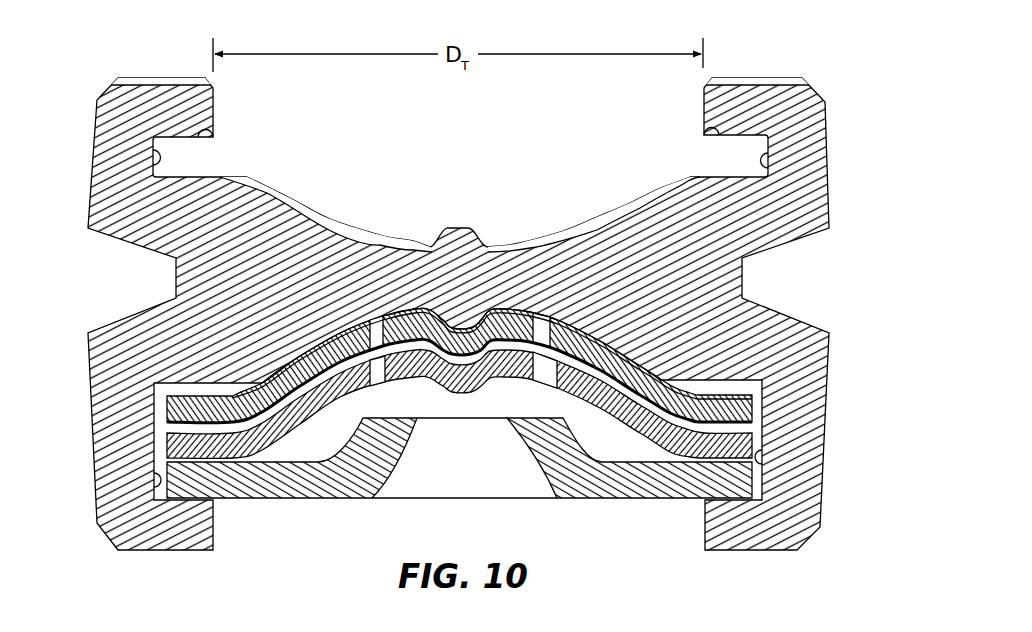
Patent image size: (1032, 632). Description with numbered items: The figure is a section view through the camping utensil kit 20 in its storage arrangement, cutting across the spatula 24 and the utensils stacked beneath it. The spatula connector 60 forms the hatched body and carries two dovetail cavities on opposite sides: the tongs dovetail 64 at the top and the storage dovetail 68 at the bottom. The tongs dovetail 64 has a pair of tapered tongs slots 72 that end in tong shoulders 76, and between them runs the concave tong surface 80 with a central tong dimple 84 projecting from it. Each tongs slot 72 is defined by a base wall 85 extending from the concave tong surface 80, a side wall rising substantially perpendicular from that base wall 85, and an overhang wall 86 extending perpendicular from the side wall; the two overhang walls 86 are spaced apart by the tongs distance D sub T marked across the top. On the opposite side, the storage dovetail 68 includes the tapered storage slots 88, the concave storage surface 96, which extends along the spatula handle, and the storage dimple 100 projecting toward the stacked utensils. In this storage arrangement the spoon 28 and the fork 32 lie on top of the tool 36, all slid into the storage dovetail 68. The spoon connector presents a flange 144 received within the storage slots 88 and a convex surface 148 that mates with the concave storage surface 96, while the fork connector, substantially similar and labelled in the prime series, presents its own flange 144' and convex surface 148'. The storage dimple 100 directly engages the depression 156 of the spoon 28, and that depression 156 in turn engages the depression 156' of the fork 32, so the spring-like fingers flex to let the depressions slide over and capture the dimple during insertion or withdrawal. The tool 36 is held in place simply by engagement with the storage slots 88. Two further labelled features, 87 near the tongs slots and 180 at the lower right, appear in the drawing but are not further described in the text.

The camping utensil kit 20 is at (216, 586).
The spatula 24 is at (742, 275).
The spoon 28 is at (650, 376).
The fork 32 is at (624, 422).
The tool 36 is at (671, 498).
The spatula connector 60 is at (108, 52).
The tongs dovetail 64 is at (772, 95).
The storage dovetail 68 is at (757, 535).
The tongs slots 72 is at (238, 148).
The tong shoulders 76 is at (400, 447).
The concave tong surface 80 is at (350, 236).
The tong dimple 84 is at (463, 228).
The base wall 85 is at (222, 176).
The overhang wall 86 is at (160, 164).
The slot notch 87 is at (215, 142).
The storage slots 88 is at (152, 500).
The concave storage surface 96 is at (315, 368).
The storage dimple 100 is at (480, 318).
The flange 144 is at (790, 403).
The flange 144' is at (713, 518).
The convex surface 148 is at (420, 329).
The convex surface 148' is at (395, 354).
The depression 156 is at (463, 411).
The depression 156' is at (459, 416).
The base plate end 180 is at (753, 494).